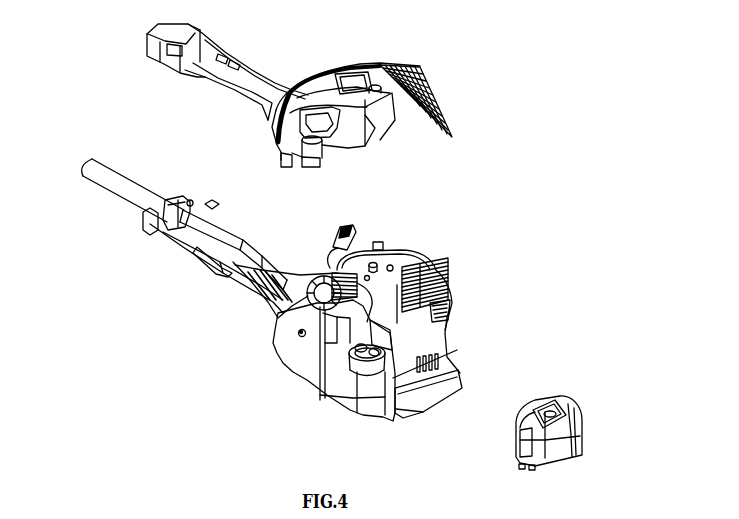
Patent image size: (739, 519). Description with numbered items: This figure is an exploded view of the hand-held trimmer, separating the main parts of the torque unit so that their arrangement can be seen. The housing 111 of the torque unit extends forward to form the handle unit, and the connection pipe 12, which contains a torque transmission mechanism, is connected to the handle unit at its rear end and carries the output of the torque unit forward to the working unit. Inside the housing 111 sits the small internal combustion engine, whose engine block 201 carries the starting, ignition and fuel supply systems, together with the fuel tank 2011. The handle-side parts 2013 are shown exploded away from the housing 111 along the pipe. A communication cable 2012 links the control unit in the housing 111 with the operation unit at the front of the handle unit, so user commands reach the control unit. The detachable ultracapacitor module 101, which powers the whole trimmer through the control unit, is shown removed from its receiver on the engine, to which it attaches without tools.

The housing 111 is at (374, 103).
The connection pipe 12 is at (87, 188).
The handle operating assembly 2013 is at (248, 238).
The engine block 201 is at (380, 258).
The fuel tank 2011 is at (343, 397).
The communication cable 2012 is at (456, 348).
The ultracapacitor module 101 is at (563, 424).